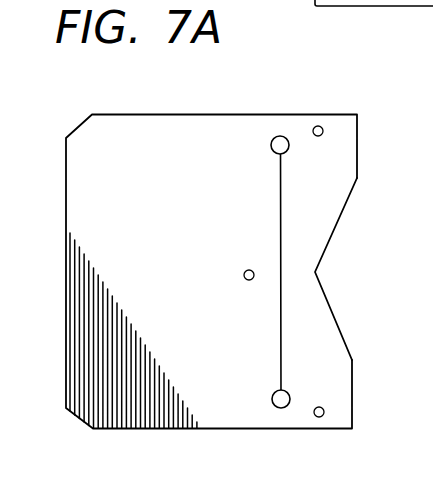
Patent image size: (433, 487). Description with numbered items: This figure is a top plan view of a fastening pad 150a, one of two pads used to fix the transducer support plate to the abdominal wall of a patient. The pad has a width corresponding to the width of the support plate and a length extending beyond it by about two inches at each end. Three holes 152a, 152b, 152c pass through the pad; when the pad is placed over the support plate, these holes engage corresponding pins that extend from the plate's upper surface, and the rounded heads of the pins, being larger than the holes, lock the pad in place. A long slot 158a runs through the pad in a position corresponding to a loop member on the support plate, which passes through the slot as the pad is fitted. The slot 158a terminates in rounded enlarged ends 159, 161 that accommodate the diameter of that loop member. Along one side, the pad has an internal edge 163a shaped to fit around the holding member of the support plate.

The fastening pad 150a is at (65, 158).
The hole 152a is at (318, 126).
The hole 152b is at (248, 269).
The hole 152c is at (320, 417).
The slot 158a is at (281, 332).
The rounded enlarged end 159 is at (277, 137).
The rounded enlarged end 161 is at (281, 408).
The internal edge 163a is at (338, 317).